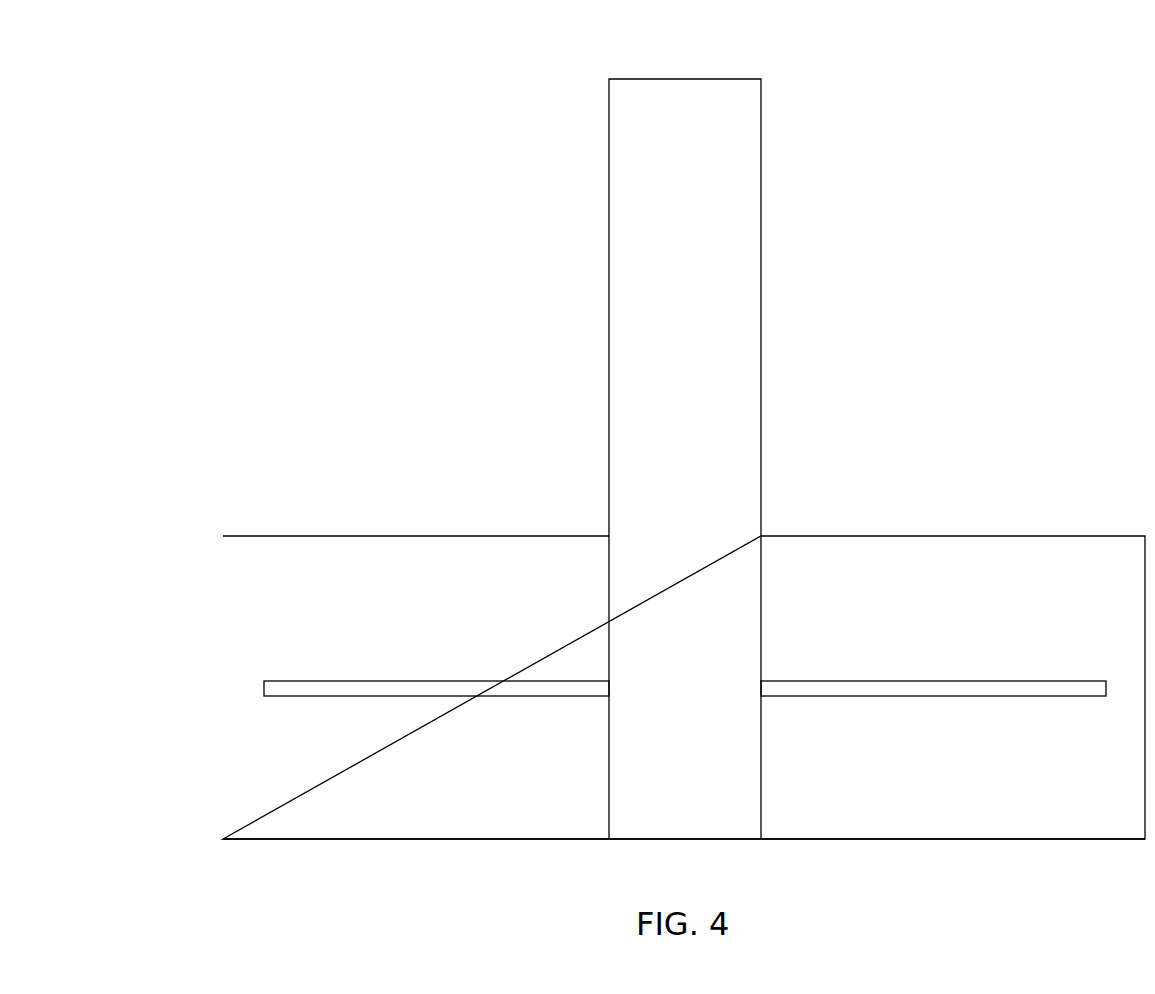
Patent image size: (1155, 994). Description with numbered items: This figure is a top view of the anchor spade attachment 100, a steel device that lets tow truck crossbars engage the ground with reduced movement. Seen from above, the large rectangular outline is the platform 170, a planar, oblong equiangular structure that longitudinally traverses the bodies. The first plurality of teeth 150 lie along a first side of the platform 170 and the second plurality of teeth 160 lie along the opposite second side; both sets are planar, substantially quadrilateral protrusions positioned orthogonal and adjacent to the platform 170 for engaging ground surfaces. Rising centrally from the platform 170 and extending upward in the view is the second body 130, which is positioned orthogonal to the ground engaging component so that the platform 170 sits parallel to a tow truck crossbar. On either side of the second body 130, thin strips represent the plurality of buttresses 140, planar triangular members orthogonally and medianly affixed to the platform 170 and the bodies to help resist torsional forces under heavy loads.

The anchor spade attachment 100 is at (297, 122).
The second body 130 is at (700, 399).
The plurality of buttresses 140 is at (363, 681).
The first plurality of teeth 150 is at (937, 846).
The second plurality of teeth 160 is at (993, 534).
The platform 170 is at (462, 797).